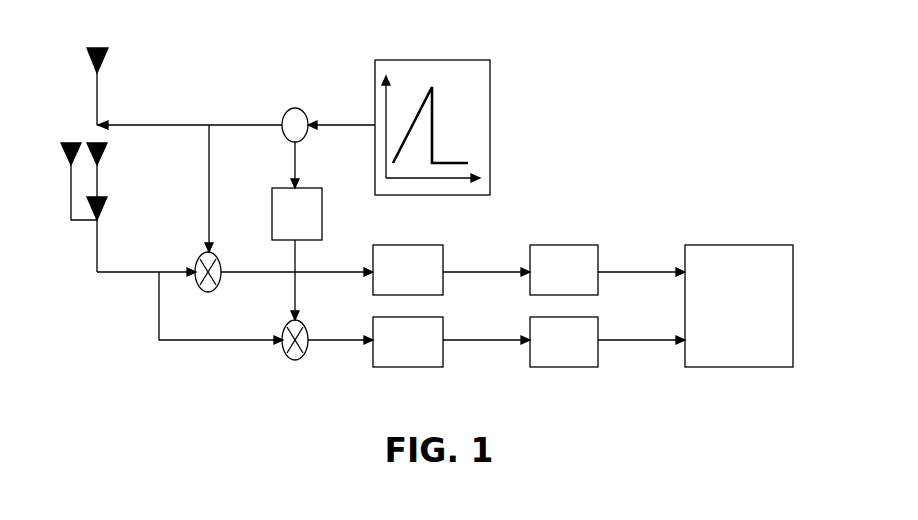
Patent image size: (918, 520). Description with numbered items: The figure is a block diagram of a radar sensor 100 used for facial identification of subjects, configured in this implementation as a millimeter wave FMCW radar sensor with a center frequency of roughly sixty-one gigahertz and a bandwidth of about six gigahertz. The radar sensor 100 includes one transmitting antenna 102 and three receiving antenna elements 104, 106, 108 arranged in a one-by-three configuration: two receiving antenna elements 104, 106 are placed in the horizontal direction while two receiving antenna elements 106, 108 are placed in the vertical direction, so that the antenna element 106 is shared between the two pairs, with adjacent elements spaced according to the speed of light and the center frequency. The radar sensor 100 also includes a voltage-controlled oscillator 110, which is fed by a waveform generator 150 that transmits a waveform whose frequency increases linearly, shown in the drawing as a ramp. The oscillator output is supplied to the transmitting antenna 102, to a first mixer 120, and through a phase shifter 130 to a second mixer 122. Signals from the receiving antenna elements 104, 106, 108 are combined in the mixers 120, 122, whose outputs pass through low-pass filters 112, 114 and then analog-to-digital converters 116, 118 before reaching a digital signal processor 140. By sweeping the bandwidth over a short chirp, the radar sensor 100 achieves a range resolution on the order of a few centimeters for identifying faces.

The radar sensor 100 is at (602, 129).
The transmitting antenna 102 is at (117, 36).
The receiving antenna element 104 is at (30, 171).
The receiving antenna element 106 is at (138, 171).
The receiving antenna element 108 is at (138, 227).
The voltage-controlled oscillator 110 is at (310, 100).
The low-pass filter 112 is at (390, 283).
The low-pass filter 114 is at (390, 355).
The analog-to-digital converter 116 is at (547, 283).
The analog-to-digital converter 118 is at (547, 355).
The mixer 120 is at (227, 320).
The mixer 122 is at (315, 395).
The phase shifter 130 is at (284, 222).
The digital signal processor 140 is at (714, 320).
The waveform generator 150 is at (483, 91).